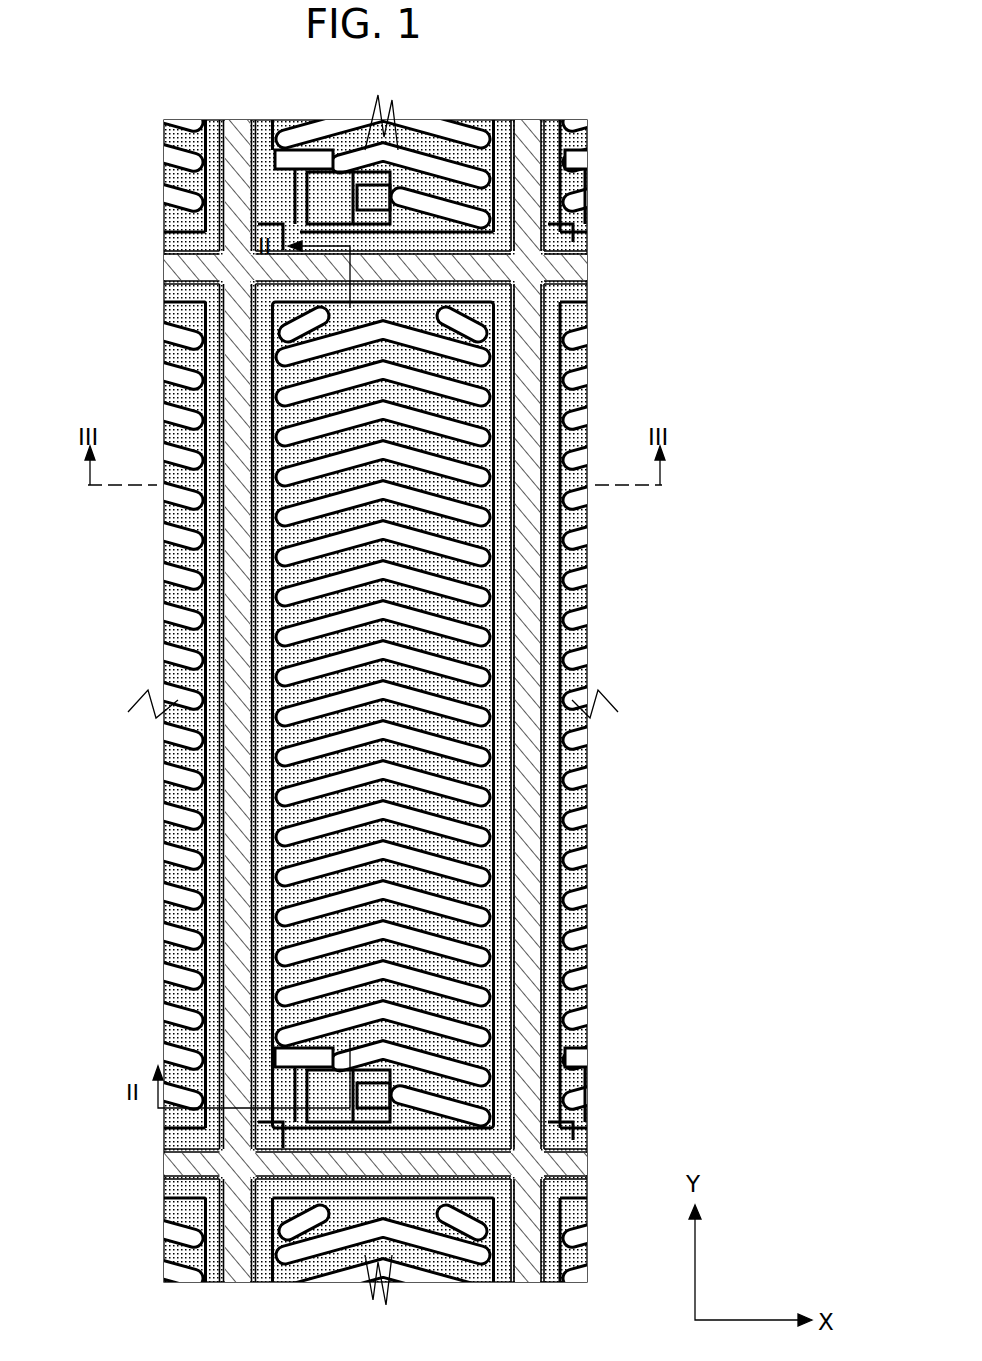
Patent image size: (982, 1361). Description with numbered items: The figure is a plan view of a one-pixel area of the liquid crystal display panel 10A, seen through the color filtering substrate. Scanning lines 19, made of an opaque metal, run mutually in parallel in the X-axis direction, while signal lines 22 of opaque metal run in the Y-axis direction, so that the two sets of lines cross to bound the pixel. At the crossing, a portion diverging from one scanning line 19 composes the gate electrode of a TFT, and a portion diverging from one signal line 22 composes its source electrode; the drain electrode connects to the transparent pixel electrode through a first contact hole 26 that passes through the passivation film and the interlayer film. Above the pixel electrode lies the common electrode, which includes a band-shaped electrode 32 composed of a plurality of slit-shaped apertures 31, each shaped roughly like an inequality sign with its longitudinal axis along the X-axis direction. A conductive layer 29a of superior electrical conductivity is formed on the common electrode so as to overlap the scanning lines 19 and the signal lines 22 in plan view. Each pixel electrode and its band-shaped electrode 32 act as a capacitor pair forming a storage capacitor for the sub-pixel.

The liquid crystal display panel 10A is at (212, 80).
The scanning line 19 is at (375, 715).
The signal line 22 is at (382, 701).
The conductive layer 29a is at (382, 701).
The slit-shaped aperture 31 is at (470, 918).
The band-shaped electrode 32 is at (470, 572).
The first contact hole 26 is at (300, 1102).
The thin film transistor TFT is at (245, 1082).